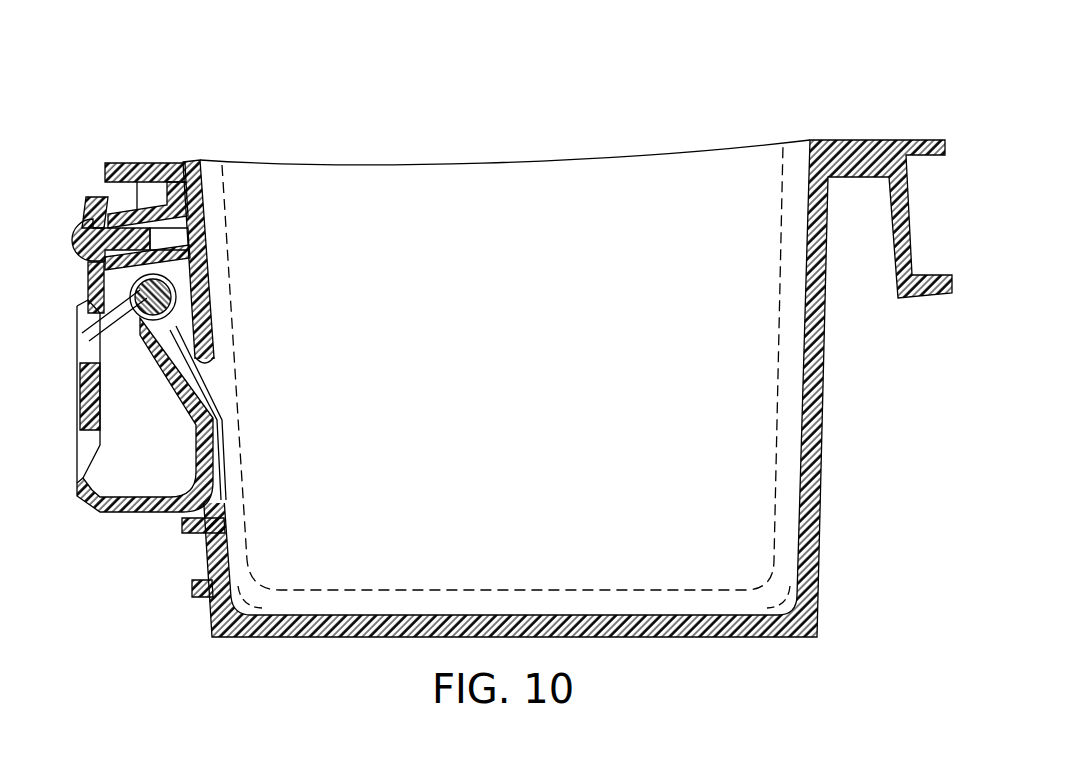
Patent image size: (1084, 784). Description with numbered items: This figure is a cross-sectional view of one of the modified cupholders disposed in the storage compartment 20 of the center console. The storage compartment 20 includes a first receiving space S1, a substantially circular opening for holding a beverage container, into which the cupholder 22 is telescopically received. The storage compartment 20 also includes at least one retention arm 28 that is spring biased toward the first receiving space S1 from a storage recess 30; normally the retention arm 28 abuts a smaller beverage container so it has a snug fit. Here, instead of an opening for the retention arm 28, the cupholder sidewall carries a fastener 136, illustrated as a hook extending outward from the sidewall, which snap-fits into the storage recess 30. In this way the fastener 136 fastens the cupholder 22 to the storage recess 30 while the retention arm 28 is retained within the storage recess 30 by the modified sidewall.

The storage compartment 20 is at (856, 138).
The cupholder 22 is at (228, 262).
The retention arm 28 is at (115, 515).
The storage recess 30 is at (182, 518).
The fastener 136 is at (214, 364).
The first receiving space S1 is at (672, 112).